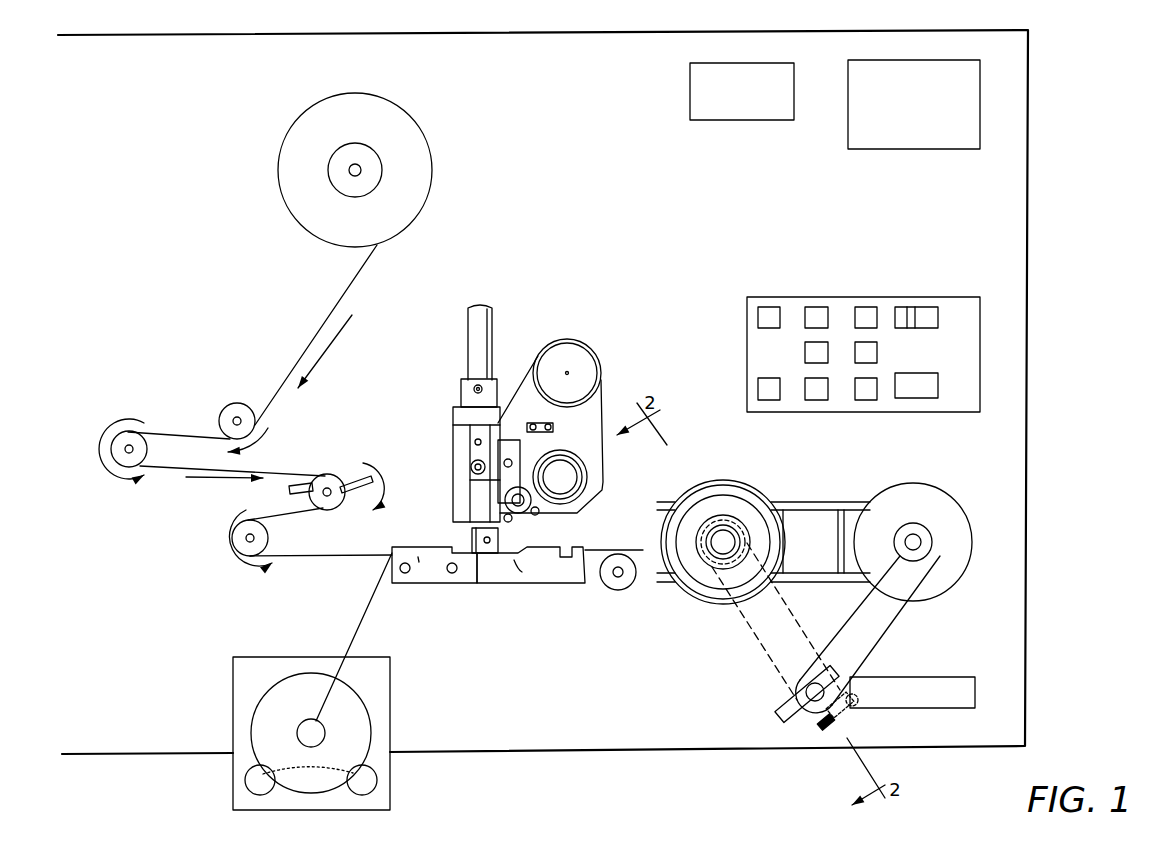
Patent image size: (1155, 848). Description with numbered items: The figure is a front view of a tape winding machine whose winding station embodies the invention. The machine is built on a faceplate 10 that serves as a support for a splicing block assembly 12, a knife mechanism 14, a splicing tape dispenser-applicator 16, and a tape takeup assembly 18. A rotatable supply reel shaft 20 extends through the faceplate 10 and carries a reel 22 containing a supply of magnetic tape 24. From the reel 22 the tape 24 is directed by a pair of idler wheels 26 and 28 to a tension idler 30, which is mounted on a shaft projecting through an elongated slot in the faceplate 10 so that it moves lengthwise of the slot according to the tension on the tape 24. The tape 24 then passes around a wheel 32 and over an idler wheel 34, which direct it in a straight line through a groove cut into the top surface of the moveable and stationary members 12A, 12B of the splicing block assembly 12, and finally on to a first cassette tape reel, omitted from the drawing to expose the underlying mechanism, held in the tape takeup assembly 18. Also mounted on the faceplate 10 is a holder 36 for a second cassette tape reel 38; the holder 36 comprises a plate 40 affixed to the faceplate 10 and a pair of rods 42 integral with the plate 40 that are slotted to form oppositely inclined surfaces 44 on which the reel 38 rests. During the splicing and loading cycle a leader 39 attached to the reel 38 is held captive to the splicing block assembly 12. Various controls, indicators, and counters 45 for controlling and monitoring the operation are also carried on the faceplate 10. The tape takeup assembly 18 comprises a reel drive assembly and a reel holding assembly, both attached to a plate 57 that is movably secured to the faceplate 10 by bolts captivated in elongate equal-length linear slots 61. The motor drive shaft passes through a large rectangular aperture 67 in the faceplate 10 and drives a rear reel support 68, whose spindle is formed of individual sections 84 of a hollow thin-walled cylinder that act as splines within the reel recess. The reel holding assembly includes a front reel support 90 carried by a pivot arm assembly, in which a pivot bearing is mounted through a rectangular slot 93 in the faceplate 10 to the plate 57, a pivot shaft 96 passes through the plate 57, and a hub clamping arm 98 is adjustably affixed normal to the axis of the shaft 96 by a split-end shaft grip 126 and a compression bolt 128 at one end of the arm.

The faceplate 10 is at (630, 243).
The splicing block assembly 12 is at (485, 582).
The moveable member 12A is at (435, 582).
The stationary member 12B is at (532, 575).
The knife mechanism 14 is at (460, 537).
The splicing tape dispenser-applicator 16 is at (440, 405).
The tape takeup assembly 18 is at (782, 519).
The supply reel shaft 20 is at (360, 158).
The reel 22 is at (412, 168).
The magnetic tape 24 is at (349, 291).
The idler wheel 26 is at (240, 403).
The idler wheel 28 is at (139, 457).
The tension idler 30 is at (333, 476).
The wheel 32 is at (262, 538).
The idler wheel 34 is at (615, 584).
The holder 36 is at (288, 737).
The second cassette tape reel 38 is at (296, 683).
The leader 39 is at (347, 630).
The plate 40 is at (240, 773).
The rods 42 is at (357, 790).
The oppositely inclined surfaces 44 is at (308, 771).
The controls, indicators, and counters 45 is at (990, 58).
The plate 57 is at (797, 545).
The linear slots 61 is at (848, 503).
The rectangular aperture 67 is at (840, 562).
The rear reel support 68 is at (698, 482).
The sections 84 is at (716, 566).
The front reel support 90 is at (967, 546).
The rectangular slot 93 is at (926, 680).
The pivot shaft 96 is at (800, 688).
The hub clamping arm 98 is at (882, 635).
The split-end shaft grip 126 is at (800, 722).
The compression bolt 128 is at (840, 720).